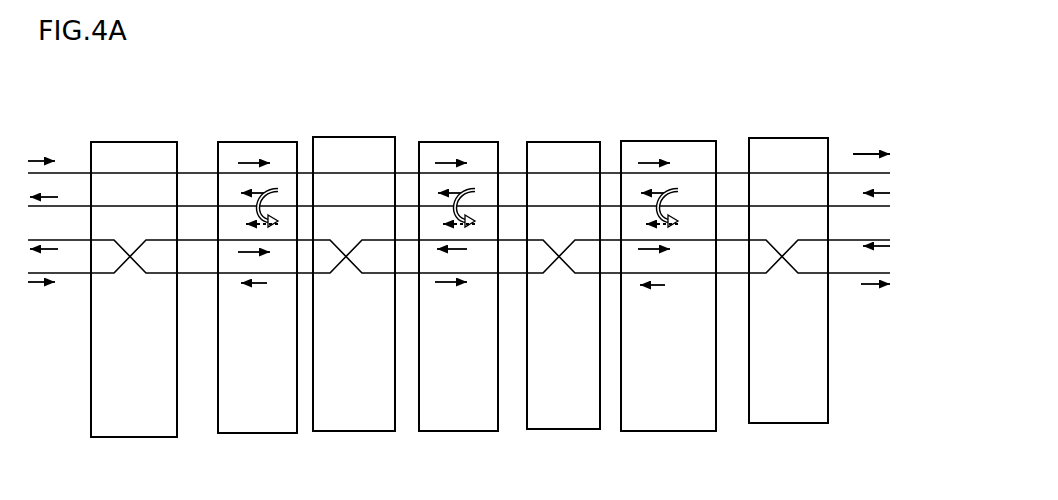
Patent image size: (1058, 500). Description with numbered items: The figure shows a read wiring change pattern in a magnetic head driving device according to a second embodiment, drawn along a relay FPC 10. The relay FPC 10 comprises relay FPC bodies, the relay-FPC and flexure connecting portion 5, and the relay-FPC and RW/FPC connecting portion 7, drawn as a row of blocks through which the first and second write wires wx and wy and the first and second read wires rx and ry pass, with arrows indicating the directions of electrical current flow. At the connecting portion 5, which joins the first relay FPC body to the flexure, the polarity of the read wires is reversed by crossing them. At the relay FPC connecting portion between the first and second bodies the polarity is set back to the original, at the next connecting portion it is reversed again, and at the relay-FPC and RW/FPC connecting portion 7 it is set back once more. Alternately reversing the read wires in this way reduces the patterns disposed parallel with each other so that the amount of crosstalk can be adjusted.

The relay FPC 10 is at (823, 79).
The relay-FPC and flexure connecting portion 5 is at (122, 142).
The relay-FPC and RW/FPC connecting portion 7 is at (773, 138).